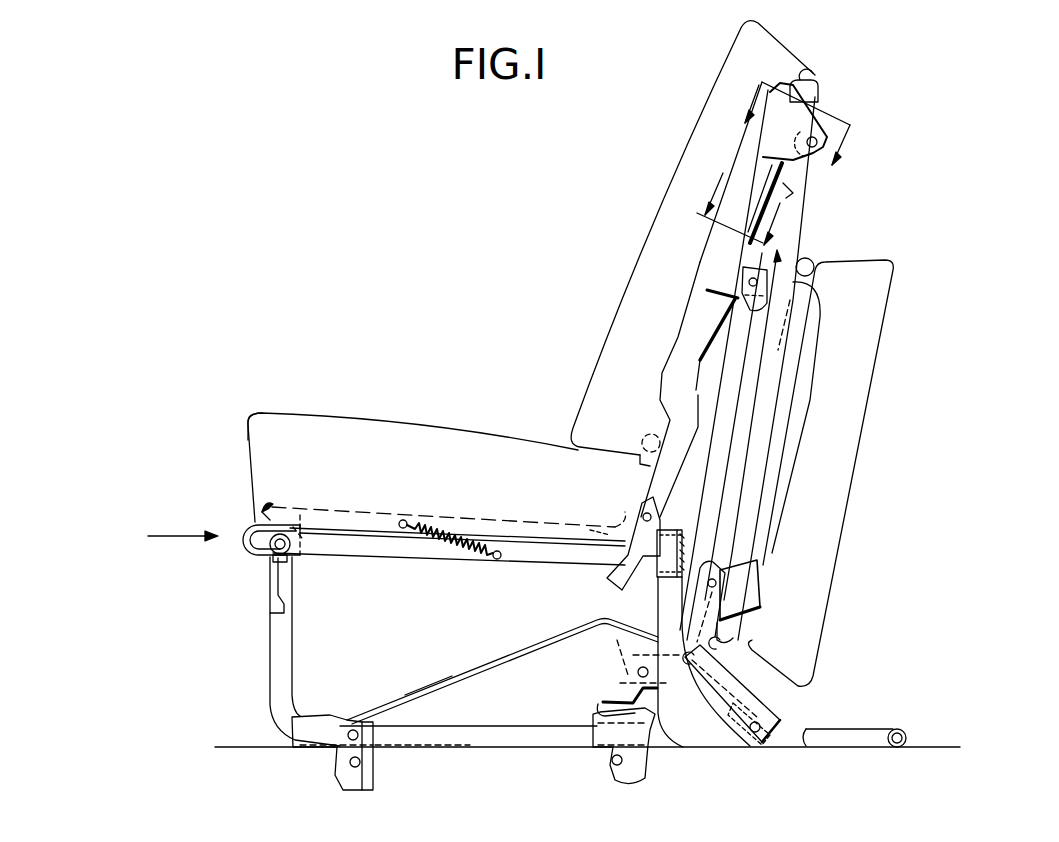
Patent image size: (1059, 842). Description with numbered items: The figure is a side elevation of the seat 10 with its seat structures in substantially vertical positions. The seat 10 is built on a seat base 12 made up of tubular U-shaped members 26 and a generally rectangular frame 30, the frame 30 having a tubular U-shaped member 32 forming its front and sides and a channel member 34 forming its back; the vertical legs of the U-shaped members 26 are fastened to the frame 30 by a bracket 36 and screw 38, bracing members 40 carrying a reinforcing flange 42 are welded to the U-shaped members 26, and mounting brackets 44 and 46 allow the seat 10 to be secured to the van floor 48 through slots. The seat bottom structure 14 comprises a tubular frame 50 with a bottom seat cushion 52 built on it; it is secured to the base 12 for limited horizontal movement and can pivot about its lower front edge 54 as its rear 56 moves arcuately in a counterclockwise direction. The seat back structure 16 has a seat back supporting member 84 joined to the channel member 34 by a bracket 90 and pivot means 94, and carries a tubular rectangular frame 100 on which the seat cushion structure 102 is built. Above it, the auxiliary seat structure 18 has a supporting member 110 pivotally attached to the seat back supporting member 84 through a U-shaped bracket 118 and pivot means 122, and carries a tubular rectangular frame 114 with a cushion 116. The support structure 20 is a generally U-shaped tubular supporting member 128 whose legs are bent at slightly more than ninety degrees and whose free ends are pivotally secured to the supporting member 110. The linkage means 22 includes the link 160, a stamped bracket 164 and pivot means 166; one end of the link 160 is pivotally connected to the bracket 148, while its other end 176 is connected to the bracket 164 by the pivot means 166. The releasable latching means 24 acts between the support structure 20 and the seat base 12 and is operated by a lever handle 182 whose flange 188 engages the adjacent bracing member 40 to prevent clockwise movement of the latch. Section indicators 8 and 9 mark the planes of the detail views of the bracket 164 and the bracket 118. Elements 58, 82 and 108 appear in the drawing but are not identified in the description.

The seat 10 is at (205, 537).
The seat base 12 is at (268, 673).
The seat bottom structure 14 is at (333, 412).
The seat back structure 16 is at (688, 167).
The auxiliary seat structure 18 is at (881, 342).
The support structure 20 is at (860, 750).
The linkage means 22 is at (737, 438).
The releasable latching means 24 is at (636, 670).
The tubular U-shaped member 26 is at (480, 750).
The rectangular frame 30 is at (382, 560).
The tubular U-shaped member 32 is at (318, 507).
The channel member 34 is at (653, 490).
The bracket 36 is at (268, 598).
The screw 38 is at (289, 563).
The bracing member 40 is at (474, 672).
The reinforcing flange 42 is at (420, 690).
The mounting bracket 44 is at (641, 776).
The mounting bracket 46 is at (332, 788).
The van floor 48 is at (243, 750).
The tubular frame 50 is at (371, 507).
The bottom seat cushion 52 is at (257, 417).
The lower front edge 54 is at (255, 503).
The rear 56 is at (640, 453).
The front pivot loop 58 is at (250, 554).
The spring 82 is at (432, 524).
The seat back supporting member 84 is at (793, 193).
The bracket 90 is at (656, 576).
The pivot means 94 is at (643, 515).
The tubular rectangular frame 100 is at (817, 79).
The seat cushion structure 102 is at (665, 235).
The spring anchor 108 is at (603, 545).
The auxiliary seat structure supporting member 110 is at (807, 217).
The tubular rectangular frame 114 is at (812, 258).
The cushion 116 is at (850, 506).
The bracket 118 is at (806, 116).
The pivot means 122 is at (822, 140).
The U-shaped tubular supporting member 128 is at (818, 729).
The bracket 148 is at (725, 712).
The link 160 is at (722, 518).
The bracket 164 is at (748, 243).
The pivot means 166 is at (740, 270).
The end 176 is at (735, 305).
The lever handle 182 is at (620, 692).
The flange 188 is at (600, 702).
The section line 8- 8 is at (742, 209).
The section line 9- 9 is at (795, 123).